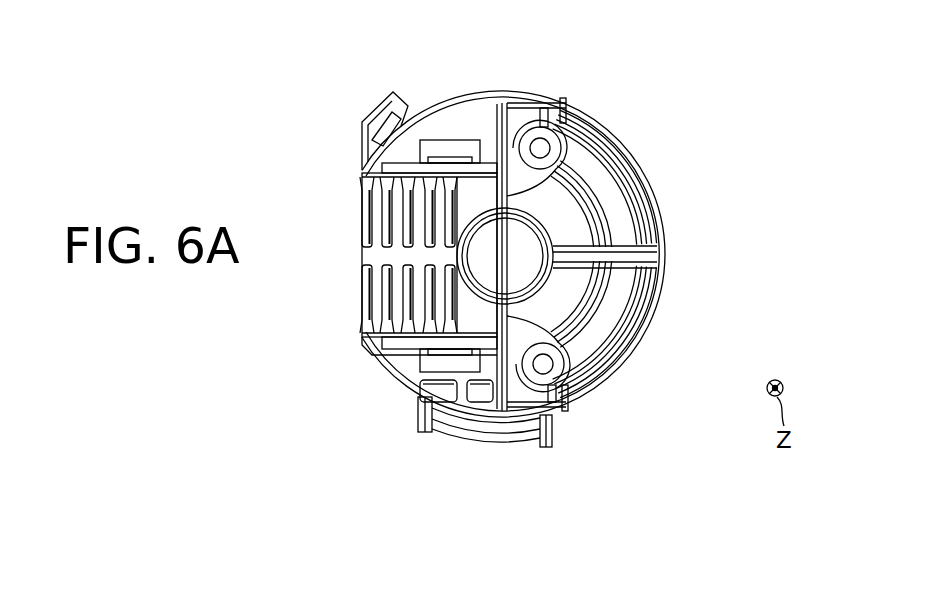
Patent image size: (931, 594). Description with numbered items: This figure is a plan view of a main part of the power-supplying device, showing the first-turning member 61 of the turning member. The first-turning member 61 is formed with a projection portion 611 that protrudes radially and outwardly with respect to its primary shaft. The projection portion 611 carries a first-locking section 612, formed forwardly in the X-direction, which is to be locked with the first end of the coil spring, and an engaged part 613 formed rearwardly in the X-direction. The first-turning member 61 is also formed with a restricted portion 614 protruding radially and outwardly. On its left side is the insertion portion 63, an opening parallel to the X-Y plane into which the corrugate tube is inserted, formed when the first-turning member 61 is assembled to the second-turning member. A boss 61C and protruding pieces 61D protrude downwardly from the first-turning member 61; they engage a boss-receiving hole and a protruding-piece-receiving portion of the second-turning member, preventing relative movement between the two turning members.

The first-turning member 61 is at (643, 101).
The boss 61C is at (548, 364).
The protruding piece 61D is at (457, 158).
The projection portion 611 is at (517, 446).
The first-locking section 612 is at (418, 407).
The engaged part 613 is at (553, 430).
The restricted portion 614 is at (398, 96).
The insertion portion 63 is at (347, 264).